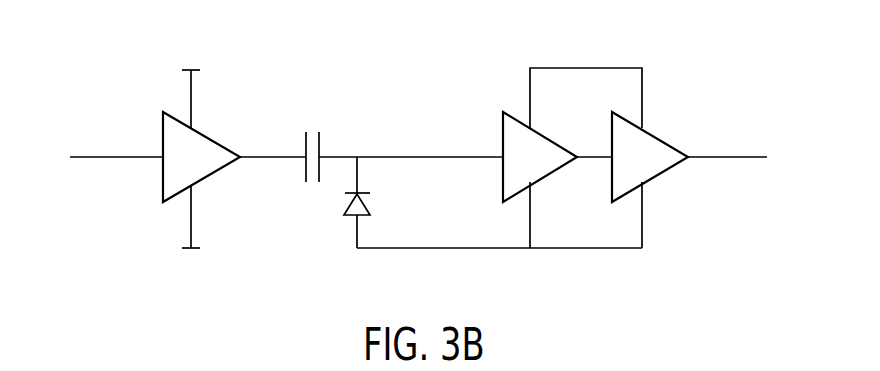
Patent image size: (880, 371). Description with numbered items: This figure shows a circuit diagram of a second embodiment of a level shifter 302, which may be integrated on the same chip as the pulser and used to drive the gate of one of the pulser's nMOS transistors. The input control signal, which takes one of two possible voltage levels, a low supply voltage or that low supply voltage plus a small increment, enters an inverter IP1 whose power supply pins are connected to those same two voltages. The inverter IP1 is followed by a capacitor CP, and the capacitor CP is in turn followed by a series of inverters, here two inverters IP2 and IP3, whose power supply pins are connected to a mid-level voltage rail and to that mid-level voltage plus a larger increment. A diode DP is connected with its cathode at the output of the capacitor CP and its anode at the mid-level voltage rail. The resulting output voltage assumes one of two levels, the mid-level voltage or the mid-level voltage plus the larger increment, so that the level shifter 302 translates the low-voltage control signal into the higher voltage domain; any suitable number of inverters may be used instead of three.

The level shifter 302 is at (401, 155).
The inverter IP1 is at (201, 159).
The inverter IP2 is at (540, 158).
The inverter IP3 is at (650, 158).
The capacitor CP is at (310, 137).
The diode DP is at (373, 212).